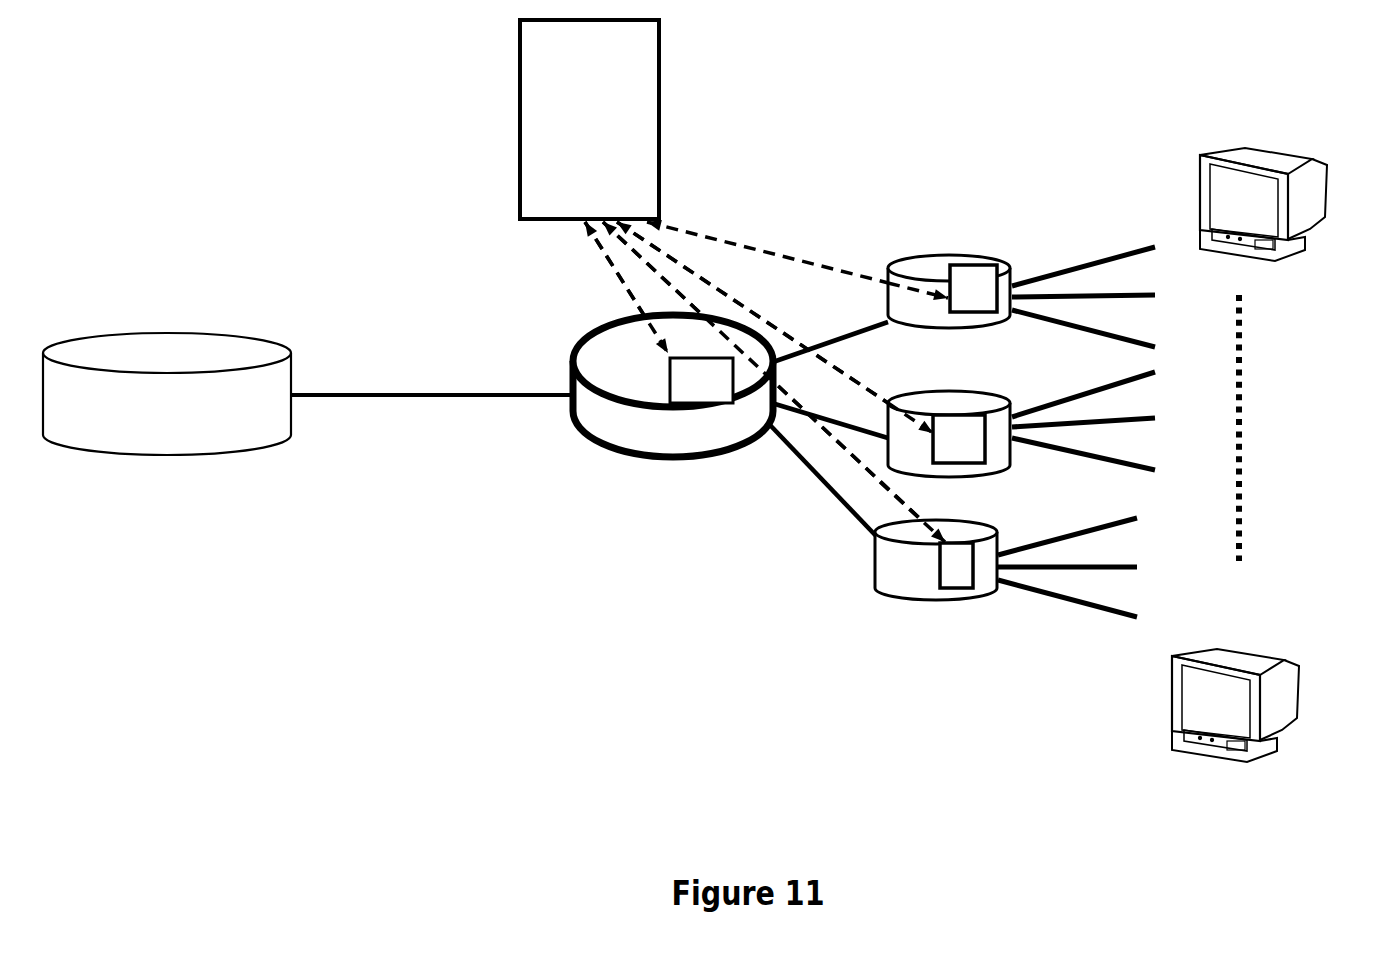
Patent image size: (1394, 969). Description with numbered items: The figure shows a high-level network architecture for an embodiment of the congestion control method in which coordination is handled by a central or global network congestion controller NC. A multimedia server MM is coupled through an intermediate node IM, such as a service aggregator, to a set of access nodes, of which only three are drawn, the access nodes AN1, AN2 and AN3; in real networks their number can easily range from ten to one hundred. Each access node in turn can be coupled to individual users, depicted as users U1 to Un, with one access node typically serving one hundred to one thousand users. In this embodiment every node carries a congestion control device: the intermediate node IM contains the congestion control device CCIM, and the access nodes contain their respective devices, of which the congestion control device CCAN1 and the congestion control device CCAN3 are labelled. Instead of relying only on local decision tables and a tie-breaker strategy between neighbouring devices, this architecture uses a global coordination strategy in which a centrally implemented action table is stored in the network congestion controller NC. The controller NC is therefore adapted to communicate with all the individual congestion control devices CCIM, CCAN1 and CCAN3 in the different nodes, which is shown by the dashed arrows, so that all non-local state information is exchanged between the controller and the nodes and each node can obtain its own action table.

The network congestion controller NC is at (589, 119).
The multimedia server MM is at (167, 417).
The intermediate node IM is at (673, 407).
The congestion control device of the intermediate node CCIM is at (697, 350).
The congestion control device of the first access node CCAN1 is at (979, 257).
The congestion control device of the third access node CCAN3 is at (927, 555).
The access node AN1 is at (962, 314).
The access node AN2 is at (970, 453).
The access node AN3 is at (936, 589).
The user U1 is at (1290, 204).
The user Un is at (1262, 705).